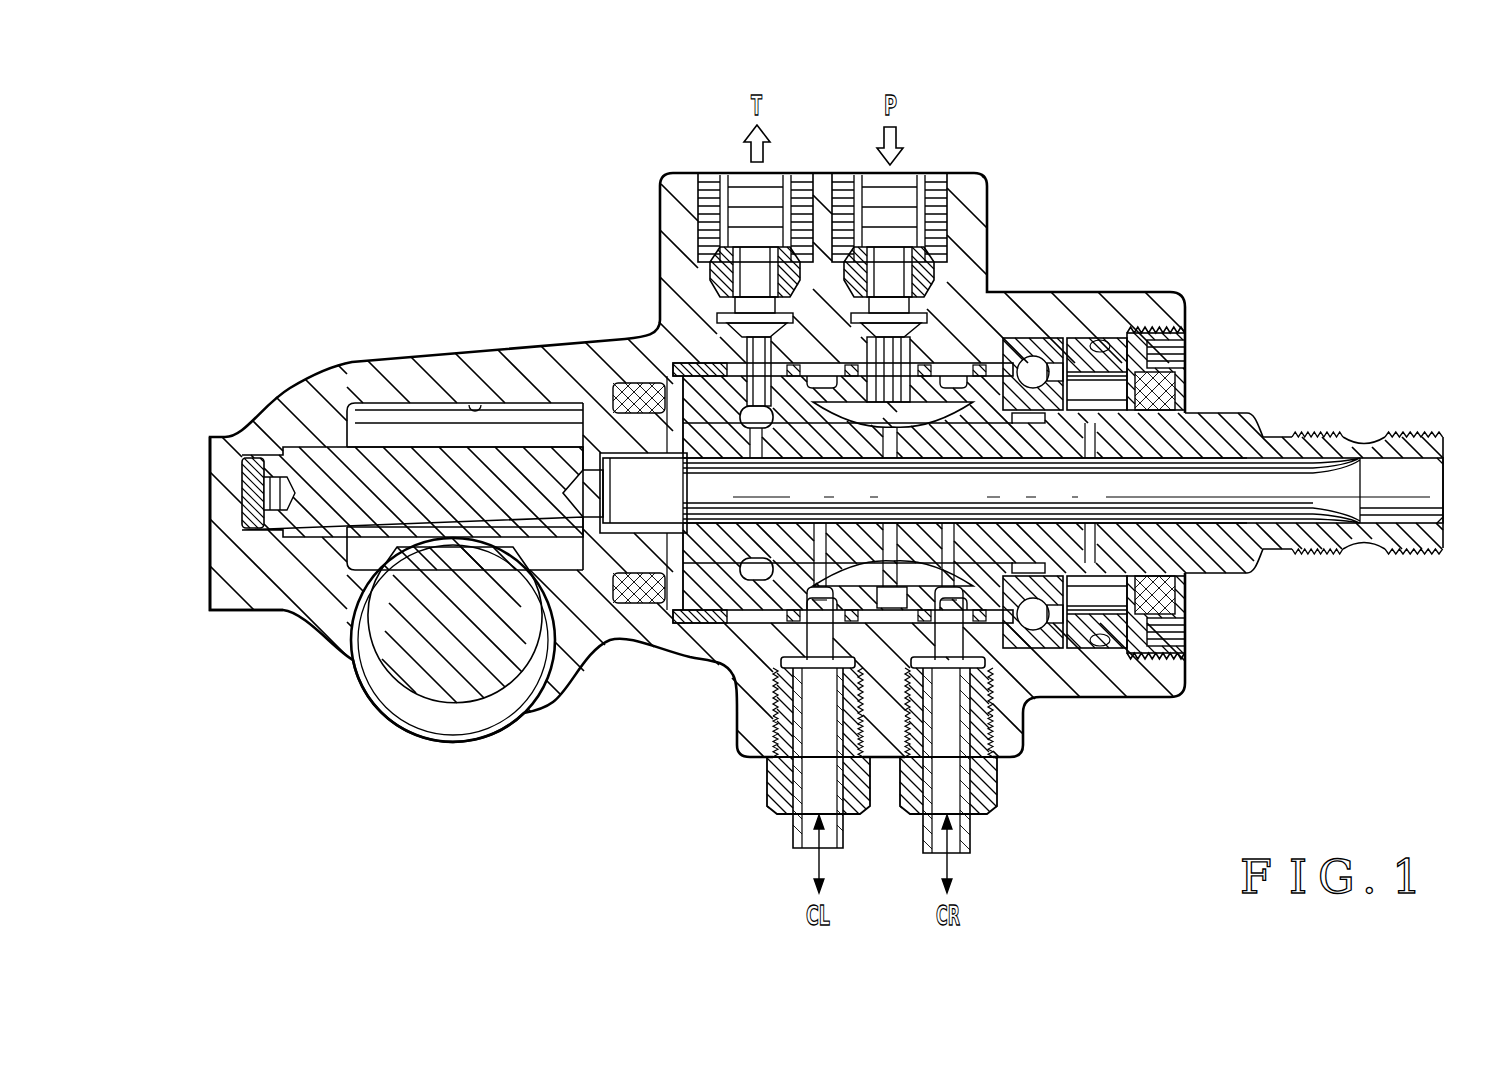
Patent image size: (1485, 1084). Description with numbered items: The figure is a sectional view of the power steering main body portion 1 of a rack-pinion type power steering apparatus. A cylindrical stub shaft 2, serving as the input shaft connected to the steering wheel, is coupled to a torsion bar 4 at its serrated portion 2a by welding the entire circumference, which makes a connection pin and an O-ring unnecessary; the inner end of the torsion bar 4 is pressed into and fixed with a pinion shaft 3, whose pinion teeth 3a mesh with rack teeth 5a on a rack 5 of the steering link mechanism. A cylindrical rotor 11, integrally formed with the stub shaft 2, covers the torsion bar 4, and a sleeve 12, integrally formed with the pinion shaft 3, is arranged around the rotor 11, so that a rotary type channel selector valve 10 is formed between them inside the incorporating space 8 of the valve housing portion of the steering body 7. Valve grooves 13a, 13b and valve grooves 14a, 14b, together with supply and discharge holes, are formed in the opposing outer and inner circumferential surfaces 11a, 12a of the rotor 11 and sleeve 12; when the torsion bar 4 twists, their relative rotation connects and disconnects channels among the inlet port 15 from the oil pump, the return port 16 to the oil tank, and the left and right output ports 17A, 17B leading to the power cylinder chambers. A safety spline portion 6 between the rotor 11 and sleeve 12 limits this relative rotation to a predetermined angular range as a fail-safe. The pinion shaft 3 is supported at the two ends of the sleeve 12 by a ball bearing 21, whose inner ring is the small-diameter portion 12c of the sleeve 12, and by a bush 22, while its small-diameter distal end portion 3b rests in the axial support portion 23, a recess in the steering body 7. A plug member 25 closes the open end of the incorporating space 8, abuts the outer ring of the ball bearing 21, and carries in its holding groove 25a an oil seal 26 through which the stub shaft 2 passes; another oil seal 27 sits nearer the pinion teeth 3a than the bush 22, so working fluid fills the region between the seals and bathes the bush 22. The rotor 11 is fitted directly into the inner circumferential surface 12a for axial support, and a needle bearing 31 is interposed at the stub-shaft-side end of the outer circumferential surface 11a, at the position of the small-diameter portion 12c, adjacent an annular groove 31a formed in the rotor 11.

The power steering main body portion 1 is at (1207, 234).
The stub shaft 2 is at (1377, 447).
The serrated portion 2a is at (1403, 550).
The pinion shaft 3 is at (606, 435).
The pinion teeth 3a is at (370, 560).
The small-diameter distal end portion 3b is at (310, 560).
The torsion bar 4 is at (1273, 483).
The rack 5 is at (418, 660).
The rack teeth 5a is at (503, 565).
The safety spline portion 6 is at (688, 605).
The steering body 7 is at (537, 365).
The incorporating space 8 is at (475, 404).
The rotary type channel selector valve 10 is at (1010, 340).
The rotor 11 is at (1008, 422).
The outer circumferential surface 11a is at (797, 430).
The sleeve 12 is at (970, 356).
The inner circumferential surface 12a is at (1052, 332).
The small-diameter portion 12c is at (1108, 342).
The valve groove 13a is at (880, 425).
The valve groove 13b is at (908, 565).
The valve groove 14a is at (843, 425).
The valve groove 14b is at (950, 572).
The inlet port 15 is at (922, 190).
The return port 16 is at (792, 193).
The left output port 17A is at (820, 813).
The right output port 17B is at (957, 823).
The ball bearing 21 is at (1072, 345).
The bush 22 is at (712, 624).
The axial support portion 23 is at (307, 446).
The plug member 25 is at (1150, 333).
The holding groove 25a is at (1172, 400).
The oil seal 26 is at (1165, 368).
The oil seal 27 is at (625, 383).
The needle bearing 31 is at (1082, 423).
The annular groove 31a is at (1040, 423).